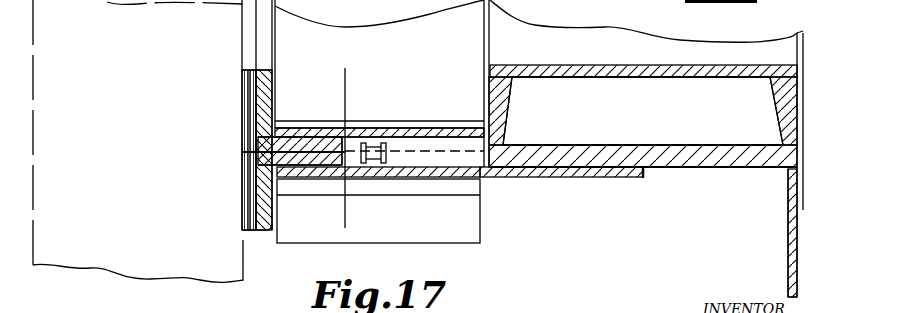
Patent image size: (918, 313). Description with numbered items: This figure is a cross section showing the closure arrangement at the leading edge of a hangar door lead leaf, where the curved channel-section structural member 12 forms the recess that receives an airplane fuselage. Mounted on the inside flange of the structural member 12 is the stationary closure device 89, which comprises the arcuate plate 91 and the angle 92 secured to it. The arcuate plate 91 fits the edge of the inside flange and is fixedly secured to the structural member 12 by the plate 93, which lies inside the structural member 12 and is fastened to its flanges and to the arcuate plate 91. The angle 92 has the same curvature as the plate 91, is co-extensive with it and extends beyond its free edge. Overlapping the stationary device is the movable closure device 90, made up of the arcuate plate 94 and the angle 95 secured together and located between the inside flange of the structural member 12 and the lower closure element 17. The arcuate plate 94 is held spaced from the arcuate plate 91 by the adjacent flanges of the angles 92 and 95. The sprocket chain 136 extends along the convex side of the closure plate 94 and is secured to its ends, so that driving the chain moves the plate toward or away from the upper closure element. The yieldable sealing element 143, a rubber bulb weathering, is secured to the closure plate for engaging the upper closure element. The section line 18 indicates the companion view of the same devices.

The curved structural member 12 is at (679, 80).
The lower closure element 17 is at (243, 262).
The section line 18- 18 is at (395, 84).
The stationary closure device 89 is at (458, 178).
The movable closure device 90 is at (355, 130).
The arcuate plate 91 is at (556, 178).
The angle 92 is at (263, 231).
The plate 93 is at (662, 147).
The arcuate plate 94 is at (433, 135).
The angle 95 is at (263, 110).
The sprocket chain 136 is at (388, 144).
The yieldable sealing element 143 is at (470, 228).